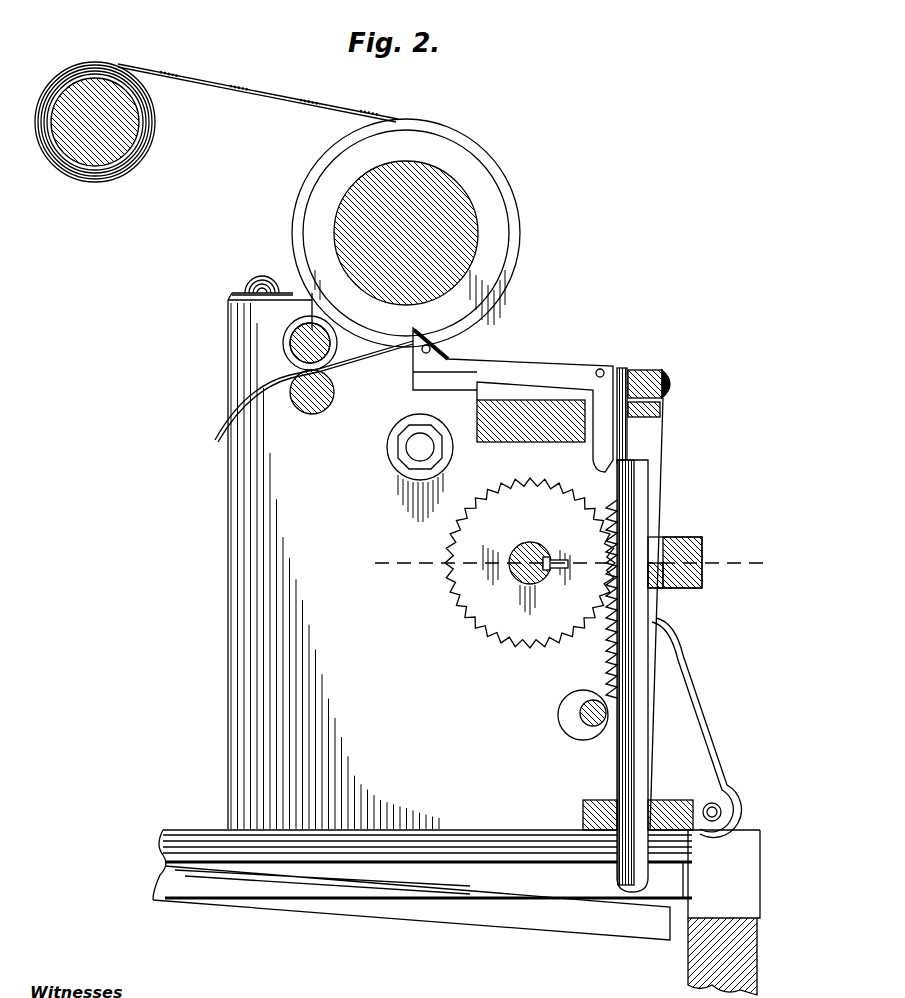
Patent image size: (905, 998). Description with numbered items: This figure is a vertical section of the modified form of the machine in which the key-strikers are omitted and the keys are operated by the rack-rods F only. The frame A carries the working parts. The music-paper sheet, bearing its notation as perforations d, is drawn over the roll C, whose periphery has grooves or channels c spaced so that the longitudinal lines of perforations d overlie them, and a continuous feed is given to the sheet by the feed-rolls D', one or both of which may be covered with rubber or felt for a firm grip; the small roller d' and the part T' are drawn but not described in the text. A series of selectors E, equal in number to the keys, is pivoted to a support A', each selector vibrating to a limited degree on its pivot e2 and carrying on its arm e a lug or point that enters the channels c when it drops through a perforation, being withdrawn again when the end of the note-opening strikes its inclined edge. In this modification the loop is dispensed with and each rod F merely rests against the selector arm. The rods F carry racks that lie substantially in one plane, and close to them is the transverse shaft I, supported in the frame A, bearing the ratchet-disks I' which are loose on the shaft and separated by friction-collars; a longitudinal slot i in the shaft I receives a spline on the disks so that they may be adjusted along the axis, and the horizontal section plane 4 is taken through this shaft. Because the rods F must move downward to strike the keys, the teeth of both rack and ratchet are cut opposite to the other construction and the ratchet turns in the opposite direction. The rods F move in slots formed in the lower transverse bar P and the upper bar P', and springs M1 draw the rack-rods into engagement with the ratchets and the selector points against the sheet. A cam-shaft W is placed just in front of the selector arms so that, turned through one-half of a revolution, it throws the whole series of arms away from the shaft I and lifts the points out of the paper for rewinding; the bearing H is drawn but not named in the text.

The frame A is at (333, 552).
The support A' is at (449, 468).
The roll C is at (300, 192).
The grooves or channels c is at (401, 233).
The feed-rolls D' is at (296, 336).
The perforations d is at (270, 94).
The roller journal d' is at (297, 343).
The selectors E is at (560, 370).
The arm e is at (459, 363).
The pivot e2 is at (605, 371).
The thumb nut T' is at (660, 599).
The ratchet-disks I' is at (530, 563).
The transverse shaft I is at (530, 553).
The longitudinal slot i is at (556, 569).
The section plane 4 4 is at (563, 568).
The rack-rods F is at (610, 658).
The upper bar P' is at (678, 551).
The bearing H is at (560, 712).
The cam-shaft W is at (588, 722).
The springs M1 is at (680, 712).
The lower transverse bar P is at (652, 802).